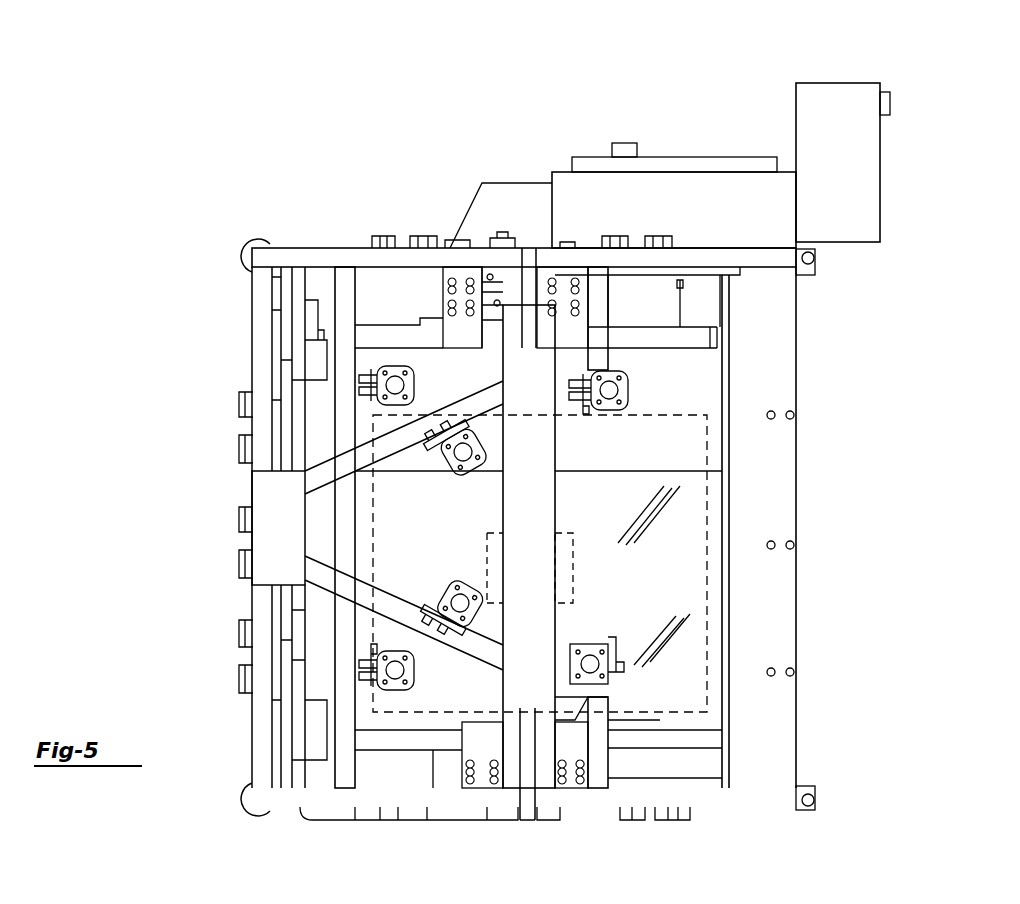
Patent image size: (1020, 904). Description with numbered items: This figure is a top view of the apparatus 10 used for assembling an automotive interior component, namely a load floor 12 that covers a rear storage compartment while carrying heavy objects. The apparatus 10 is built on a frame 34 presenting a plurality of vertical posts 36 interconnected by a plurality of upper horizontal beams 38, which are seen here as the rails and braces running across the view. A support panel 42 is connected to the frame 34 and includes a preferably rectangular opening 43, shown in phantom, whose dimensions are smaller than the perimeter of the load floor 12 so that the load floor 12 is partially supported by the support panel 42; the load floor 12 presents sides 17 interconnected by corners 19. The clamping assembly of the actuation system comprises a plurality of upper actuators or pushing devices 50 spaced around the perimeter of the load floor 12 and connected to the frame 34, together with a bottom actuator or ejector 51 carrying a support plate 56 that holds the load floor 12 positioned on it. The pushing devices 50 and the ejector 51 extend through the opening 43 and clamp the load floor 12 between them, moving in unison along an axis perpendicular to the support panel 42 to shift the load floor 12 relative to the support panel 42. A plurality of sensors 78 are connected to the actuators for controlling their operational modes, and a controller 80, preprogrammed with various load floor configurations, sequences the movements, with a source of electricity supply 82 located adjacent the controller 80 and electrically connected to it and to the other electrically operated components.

The apparatus 10 is at (450, 180).
The load floor 12 is at (660, 587).
The sides 17 is at (707, 665).
The corners 19 is at (718, 728).
The frame 34 is at (292, 262).
The vertical posts 36 is at (264, 257).
The upper horizontal beams 38 is at (337, 268).
The support panel 42 is at (765, 512).
The opening 43 is at (707, 545).
The pushing devices 50 is at (402, 385).
The ejector 51 is at (582, 588).
The support plate 56 is at (566, 533).
The sensors 78 is at (422, 236).
The controller 80 is at (826, 100).
The source of electricity supply 82 is at (676, 185).